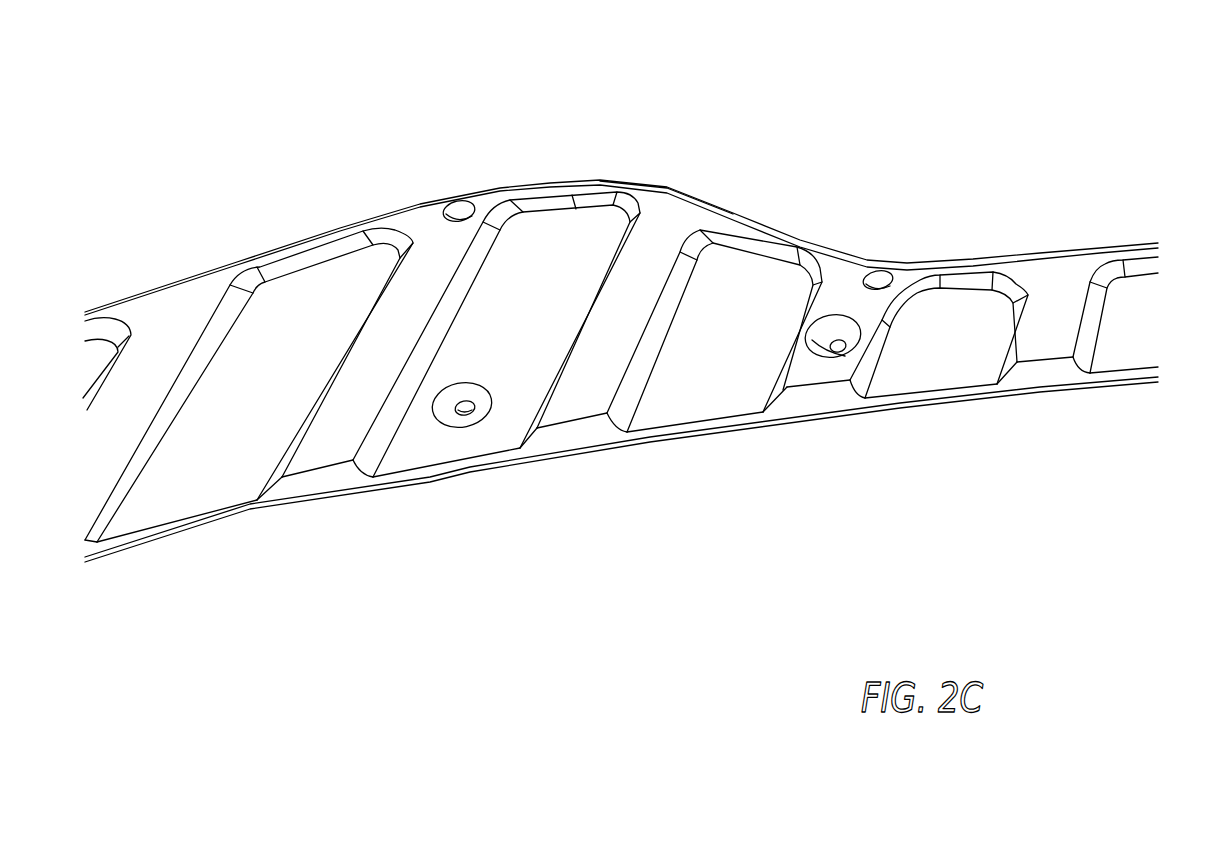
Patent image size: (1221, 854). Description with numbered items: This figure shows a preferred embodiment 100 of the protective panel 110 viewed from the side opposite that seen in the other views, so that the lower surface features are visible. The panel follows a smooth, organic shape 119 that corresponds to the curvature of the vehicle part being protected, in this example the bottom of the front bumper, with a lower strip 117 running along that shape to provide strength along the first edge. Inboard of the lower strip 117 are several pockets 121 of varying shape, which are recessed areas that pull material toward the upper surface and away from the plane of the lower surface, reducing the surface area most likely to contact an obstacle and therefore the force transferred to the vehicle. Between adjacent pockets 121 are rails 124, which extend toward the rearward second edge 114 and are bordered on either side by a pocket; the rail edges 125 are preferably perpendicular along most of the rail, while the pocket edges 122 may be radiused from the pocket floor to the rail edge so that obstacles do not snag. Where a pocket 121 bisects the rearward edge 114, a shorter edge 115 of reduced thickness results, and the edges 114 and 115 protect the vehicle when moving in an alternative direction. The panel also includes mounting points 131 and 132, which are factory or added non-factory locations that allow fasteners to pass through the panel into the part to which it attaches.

The preferred embodiment 100 is at (729, 64).
The protective panel 110 is at (621, 343).
The second edge 114 is at (568, 440).
The edge of reduced thickness 115 is at (700, 440).
The lower strip 117 is at (338, 233).
The shape 119 is at (663, 183).
The pocket 121 is at (620, 352).
The pocket edge 122 is at (693, 277).
The rail 124 is at (157, 392).
The rail edge 125 is at (863, 362).
The mounting point 131 is at (876, 280).
The mounting point 132 is at (450, 417).